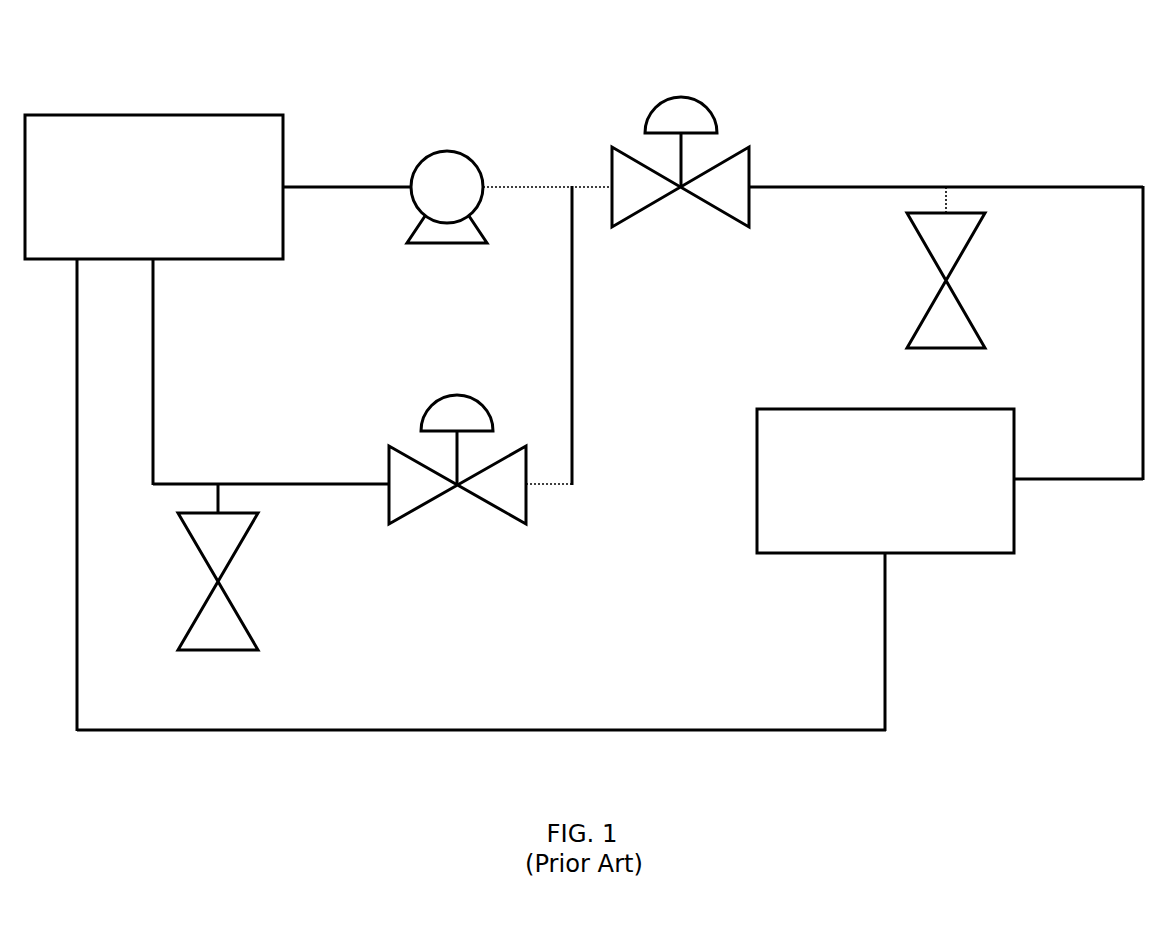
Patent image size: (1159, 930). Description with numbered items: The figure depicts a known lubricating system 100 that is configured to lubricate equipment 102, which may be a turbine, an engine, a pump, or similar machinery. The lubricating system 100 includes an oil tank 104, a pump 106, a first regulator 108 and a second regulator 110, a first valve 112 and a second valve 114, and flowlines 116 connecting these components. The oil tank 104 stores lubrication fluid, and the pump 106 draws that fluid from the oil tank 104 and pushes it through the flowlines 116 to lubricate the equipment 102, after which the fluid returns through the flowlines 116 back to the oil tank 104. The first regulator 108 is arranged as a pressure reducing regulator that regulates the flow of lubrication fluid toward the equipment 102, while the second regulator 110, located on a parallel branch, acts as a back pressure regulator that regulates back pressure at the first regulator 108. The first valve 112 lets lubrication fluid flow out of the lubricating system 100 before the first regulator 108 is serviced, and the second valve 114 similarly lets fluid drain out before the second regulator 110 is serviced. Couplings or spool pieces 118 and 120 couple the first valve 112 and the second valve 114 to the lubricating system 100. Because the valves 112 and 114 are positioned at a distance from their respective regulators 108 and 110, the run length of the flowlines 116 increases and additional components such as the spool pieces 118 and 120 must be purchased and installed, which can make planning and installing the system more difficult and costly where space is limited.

The lubricating system 100 is at (864, 76).
The equipment 102 is at (1015, 430).
The oil tank 104 is at (153, 113).
The pump 106 is at (448, 152).
The first regulator 108 is at (707, 83).
The second regulator 110 is at (457, 396).
The first valve 112 is at (965, 312).
The second valve 114 is at (238, 613).
The flowlines 116 is at (678, 728).
The coupling or spool piece 118 is at (946, 185).
The coupling or spool piece 120 is at (218, 483).